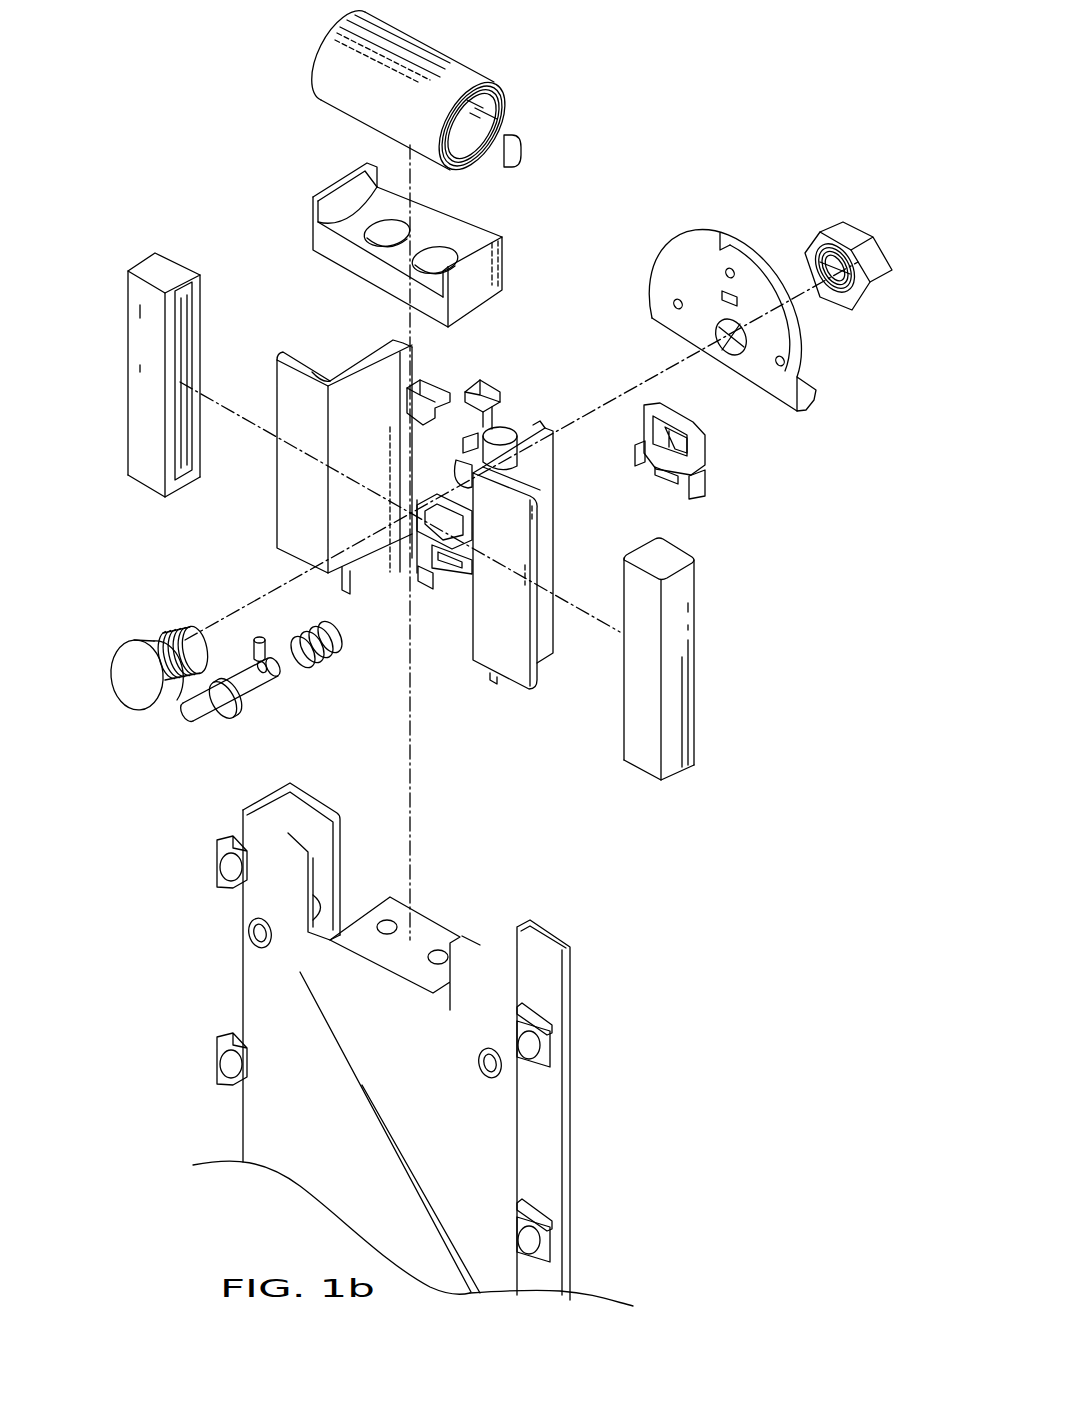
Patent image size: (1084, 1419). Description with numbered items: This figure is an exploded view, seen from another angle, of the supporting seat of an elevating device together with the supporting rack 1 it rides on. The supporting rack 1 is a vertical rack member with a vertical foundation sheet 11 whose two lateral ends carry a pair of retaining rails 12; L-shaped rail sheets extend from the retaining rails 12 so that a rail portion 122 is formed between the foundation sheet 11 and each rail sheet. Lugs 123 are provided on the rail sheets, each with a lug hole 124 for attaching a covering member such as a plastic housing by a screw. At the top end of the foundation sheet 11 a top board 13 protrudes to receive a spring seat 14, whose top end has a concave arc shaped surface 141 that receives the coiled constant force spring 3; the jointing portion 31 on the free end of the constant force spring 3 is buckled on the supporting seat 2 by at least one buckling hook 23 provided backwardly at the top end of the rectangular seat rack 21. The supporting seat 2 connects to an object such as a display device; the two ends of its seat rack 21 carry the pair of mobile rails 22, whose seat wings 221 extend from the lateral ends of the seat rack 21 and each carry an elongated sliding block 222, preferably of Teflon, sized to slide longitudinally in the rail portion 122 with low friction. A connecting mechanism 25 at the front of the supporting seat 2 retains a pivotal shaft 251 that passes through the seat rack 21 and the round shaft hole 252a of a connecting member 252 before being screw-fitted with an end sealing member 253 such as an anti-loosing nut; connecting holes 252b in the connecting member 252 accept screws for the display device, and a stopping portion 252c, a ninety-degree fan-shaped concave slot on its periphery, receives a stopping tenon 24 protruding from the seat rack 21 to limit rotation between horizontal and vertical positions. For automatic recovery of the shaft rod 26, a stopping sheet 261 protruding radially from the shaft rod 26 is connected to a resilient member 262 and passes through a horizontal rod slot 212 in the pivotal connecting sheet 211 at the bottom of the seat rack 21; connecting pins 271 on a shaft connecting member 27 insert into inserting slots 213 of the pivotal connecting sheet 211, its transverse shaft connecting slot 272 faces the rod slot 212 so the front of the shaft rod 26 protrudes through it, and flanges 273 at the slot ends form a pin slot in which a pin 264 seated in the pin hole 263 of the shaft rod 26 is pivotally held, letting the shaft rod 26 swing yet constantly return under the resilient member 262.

The supporting rack 1 is at (413, 1044).
The foundation sheet 11 is at (295, 1027).
The retaining rails 12 is at (320, 837).
The top board 13 is at (420, 930).
The rail portion 122 is at (533, 945).
The lugs 123 is at (550, 1055).
The lug hole 124 is at (535, 1035).
The spring seat 14 is at (449, 245).
The concave arc shaped surface 141 is at (425, 240).
The supporting seat 2 is at (503, 462).
The seat rack 21 is at (372, 547).
The pivotal connecting sheet 211 is at (423, 547).
The rod slot 212 is at (472, 572).
The inserting slots 213 is at (430, 577).
The mobile rails 22 is at (463, 539).
The seat wings 221 is at (285, 397).
The sliding block 222 is at (182, 322).
The buckling hook 23 is at (417, 410).
The stopping tenon 24 is at (483, 390).
The connecting mechanism 25 is at (503, 405).
The pivotal shaft 251 is at (150, 640).
The connecting member 252 is at (747, 283).
The round shaft hole 252a is at (727, 330).
The connecting holes 252b is at (780, 358).
The stopping portion 252c is at (750, 253).
The end sealing member 253 is at (850, 237).
The shaft rod 26 is at (270, 670).
The stopping sheet 261 is at (230, 713).
The resilient member 262 is at (333, 640).
The pin hole 263 is at (263, 667).
The pin 264 is at (253, 648).
The shaft connecting member 27 is at (680, 468).
The connecting pins 271 is at (705, 485).
The shaft connecting slot 272 is at (665, 427).
The flanges 273 is at (680, 416).
The constant force spring 3 is at (461, 96).
The jointing portion 31 is at (521, 153).